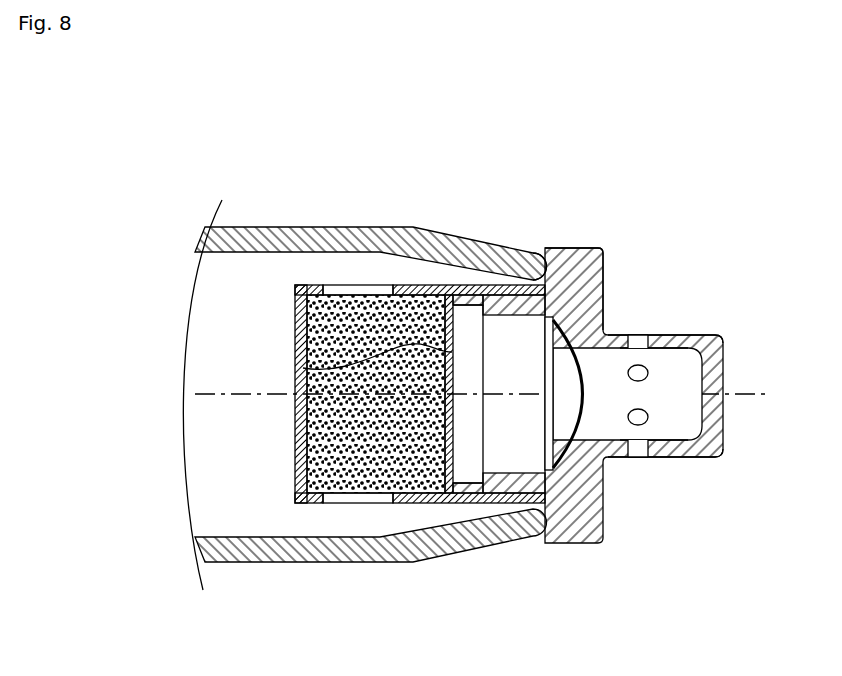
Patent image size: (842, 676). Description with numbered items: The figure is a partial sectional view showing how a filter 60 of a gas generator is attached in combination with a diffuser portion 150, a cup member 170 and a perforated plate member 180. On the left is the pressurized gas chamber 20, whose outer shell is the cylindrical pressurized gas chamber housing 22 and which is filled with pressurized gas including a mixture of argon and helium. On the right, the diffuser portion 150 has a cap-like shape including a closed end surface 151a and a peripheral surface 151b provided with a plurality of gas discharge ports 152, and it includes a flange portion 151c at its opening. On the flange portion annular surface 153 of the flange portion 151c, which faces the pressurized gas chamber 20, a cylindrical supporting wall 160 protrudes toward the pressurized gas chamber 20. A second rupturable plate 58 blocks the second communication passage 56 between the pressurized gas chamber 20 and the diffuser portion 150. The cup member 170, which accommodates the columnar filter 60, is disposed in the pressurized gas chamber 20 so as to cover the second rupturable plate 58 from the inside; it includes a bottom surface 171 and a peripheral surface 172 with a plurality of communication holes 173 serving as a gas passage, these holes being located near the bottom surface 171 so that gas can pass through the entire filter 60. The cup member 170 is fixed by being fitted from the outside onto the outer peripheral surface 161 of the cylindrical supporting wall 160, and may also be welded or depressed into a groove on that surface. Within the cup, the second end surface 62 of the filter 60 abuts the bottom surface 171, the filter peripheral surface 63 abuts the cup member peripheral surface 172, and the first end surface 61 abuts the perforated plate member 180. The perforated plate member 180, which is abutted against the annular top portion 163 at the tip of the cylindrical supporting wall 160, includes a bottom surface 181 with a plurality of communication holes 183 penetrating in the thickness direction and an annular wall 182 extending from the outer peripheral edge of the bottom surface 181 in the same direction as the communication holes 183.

The pressurized gas chamber 20 is at (235, 287).
The pressurized gas chamber housing 22 is at (262, 238).
The second communication passage 56 is at (651, 404).
The second rupturable plate 58 is at (588, 404).
The filter 60 is at (428, 503).
The first end surface 61 is at (455, 396).
The second end surface 62 is at (222, 394).
The filter peripheral surface 63 is at (347, 501).
The diffuser portion 150 is at (647, 367).
The closed end surface 151a is at (682, 348).
The peripheral surface 151b is at (684, 458).
The flange portion 151c is at (590, 249).
The gas discharge ports 152 is at (637, 457).
The flange portion annular surface 153 is at (531, 276).
The cylindrical supporting wall 160 is at (484, 220).
The outer peripheral surface 161 is at (495, 296).
The annular top portion 163 is at (460, 296).
The cup member 170 is at (333, 397).
The bottom surface 171 is at (296, 418).
The peripheral surface 172 is at (402, 288).
The communication holes 173 is at (353, 290).
The perforated plate member 180 is at (445, 405).
The bottom surface 181 is at (303, 368).
The annular wall 182 is at (463, 454).
The communication holes 183 is at (508, 495).